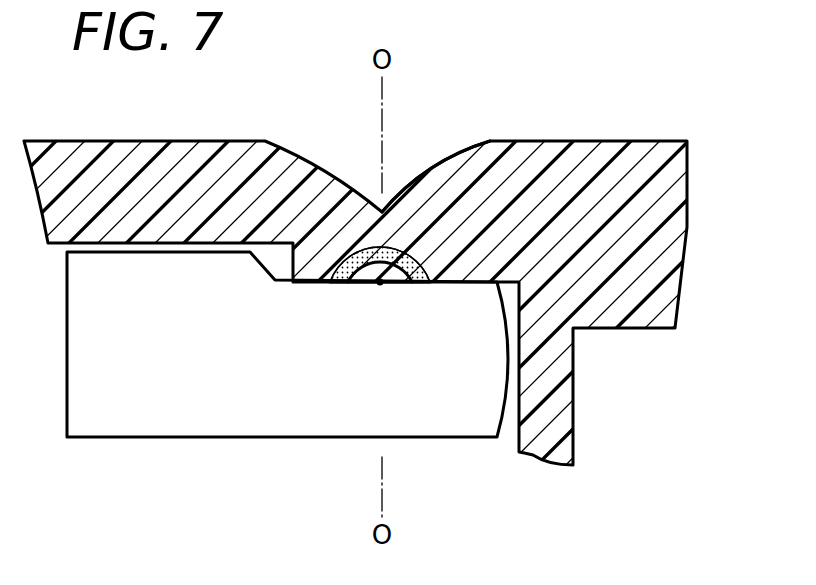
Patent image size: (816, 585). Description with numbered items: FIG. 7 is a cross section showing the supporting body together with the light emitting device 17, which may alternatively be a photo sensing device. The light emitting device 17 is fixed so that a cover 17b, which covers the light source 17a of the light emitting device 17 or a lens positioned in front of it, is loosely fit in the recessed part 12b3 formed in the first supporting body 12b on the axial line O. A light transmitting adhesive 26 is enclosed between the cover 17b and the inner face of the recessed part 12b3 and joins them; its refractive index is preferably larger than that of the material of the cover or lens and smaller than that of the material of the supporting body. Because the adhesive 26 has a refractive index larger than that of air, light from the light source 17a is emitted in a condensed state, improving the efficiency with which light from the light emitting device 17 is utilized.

The first supporting body 12b is at (613, 317).
The recessed part 12b3 is at (420, 260).
The light emitting device 17 is at (198, 438).
The light source 17a is at (378, 286).
The cover 17b is at (365, 249).
The light transmitting adhesive 26 is at (418, 286).